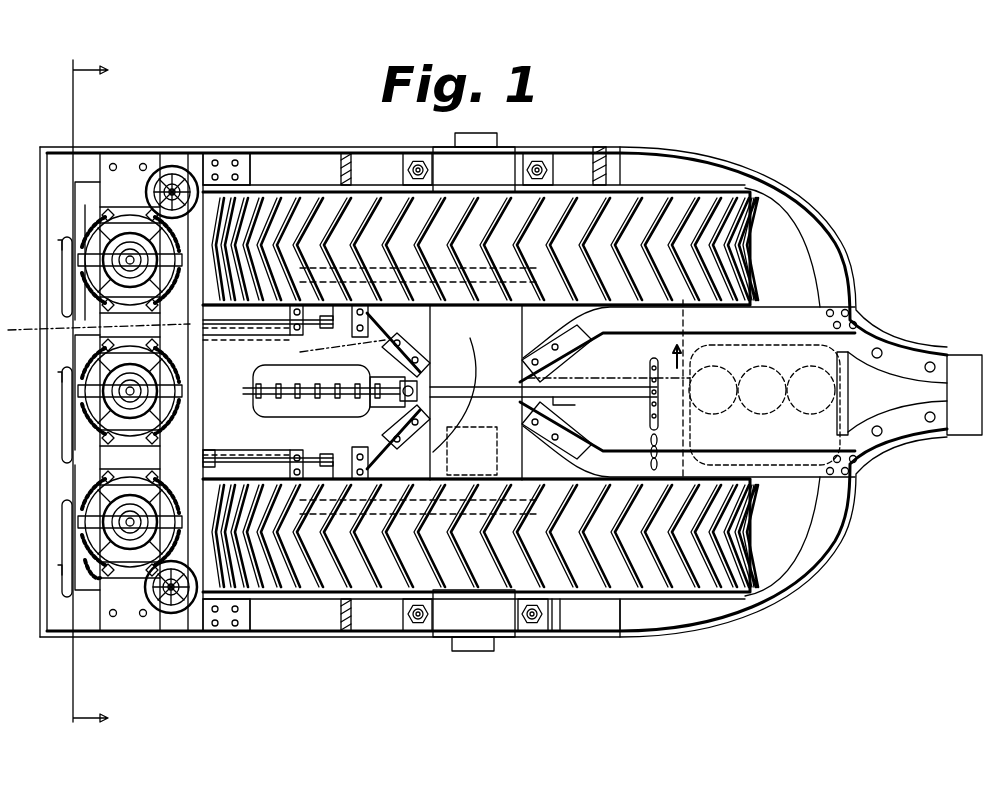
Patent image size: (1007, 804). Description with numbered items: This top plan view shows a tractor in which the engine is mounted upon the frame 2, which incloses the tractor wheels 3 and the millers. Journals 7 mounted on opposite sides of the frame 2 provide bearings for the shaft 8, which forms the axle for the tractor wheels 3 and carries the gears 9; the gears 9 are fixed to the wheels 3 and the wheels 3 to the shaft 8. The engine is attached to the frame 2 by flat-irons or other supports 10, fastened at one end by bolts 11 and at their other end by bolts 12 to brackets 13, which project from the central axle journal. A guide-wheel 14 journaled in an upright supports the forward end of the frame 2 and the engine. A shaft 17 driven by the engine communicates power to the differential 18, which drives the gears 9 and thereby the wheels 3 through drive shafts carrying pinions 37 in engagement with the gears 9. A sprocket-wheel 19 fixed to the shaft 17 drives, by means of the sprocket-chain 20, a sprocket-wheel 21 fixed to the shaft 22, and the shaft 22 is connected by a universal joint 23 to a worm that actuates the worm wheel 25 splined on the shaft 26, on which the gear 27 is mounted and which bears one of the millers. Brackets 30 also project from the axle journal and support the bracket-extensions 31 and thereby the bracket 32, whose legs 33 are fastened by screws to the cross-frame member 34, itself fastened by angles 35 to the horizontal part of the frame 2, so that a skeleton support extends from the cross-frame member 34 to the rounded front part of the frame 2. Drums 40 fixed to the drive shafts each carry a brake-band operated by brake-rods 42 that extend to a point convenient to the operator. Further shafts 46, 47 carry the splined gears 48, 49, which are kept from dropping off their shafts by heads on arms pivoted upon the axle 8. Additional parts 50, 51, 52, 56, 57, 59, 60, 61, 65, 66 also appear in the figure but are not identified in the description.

The frame 2 is at (805, 214).
The tractor wheels 3 is at (647, 197).
The journals 7 is at (474, 392).
The shaft 8 is at (480, 134).
The gears 9 is at (522, 186).
The flat-irons or other supports 10 is at (627, 470).
The bolts 11 is at (858, 320).
The bolts 12 is at (572, 351).
The brackets 13 is at (536, 386).
The guide-wheel 14 is at (962, 440).
The shaft 17 is at (560, 402).
The differential 18 is at (313, 410).
The sprocket-wheel 19 is at (652, 364).
The sprocket-chain 20 is at (660, 438).
The sprocket-wheel 21 is at (657, 468).
The shaft 22 is at (385, 456).
The universal joint 23 is at (208, 455).
The worm wheel 25 is at (72, 356).
The shaft 26 is at (128, 396).
The gear 27 is at (70, 326).
The brackets 30 is at (420, 376).
The bracket-extensions 31 is at (398, 342).
The bracket 32 is at (328, 326).
The legs 33 is at (214, 336).
The cross-frame member 34 is at (204, 368).
The angles 35 is at (245, 168).
The pinions 37 is at (345, 218).
The drums 40 is at (294, 215).
The brake-rods 42 is at (235, 326).
The shaft 46 is at (127, 260).
The shaft 47 is at (128, 528).
The gear 48 is at (90, 233).
The gear 49 is at (97, 575).
The lug 50 is at (62, 386).
The lug 51 is at (60, 240).
The lug 52 is at (62, 571).
The spokes 56 is at (193, 170).
The wheel 57 is at (172, 170).
The hub 59 is at (168, 185).
The wheel 60 is at (125, 200).
The gear sector 61 is at (85, 210).
The lever 65 is at (92, 160).
The shaft 66 is at (80, 256).